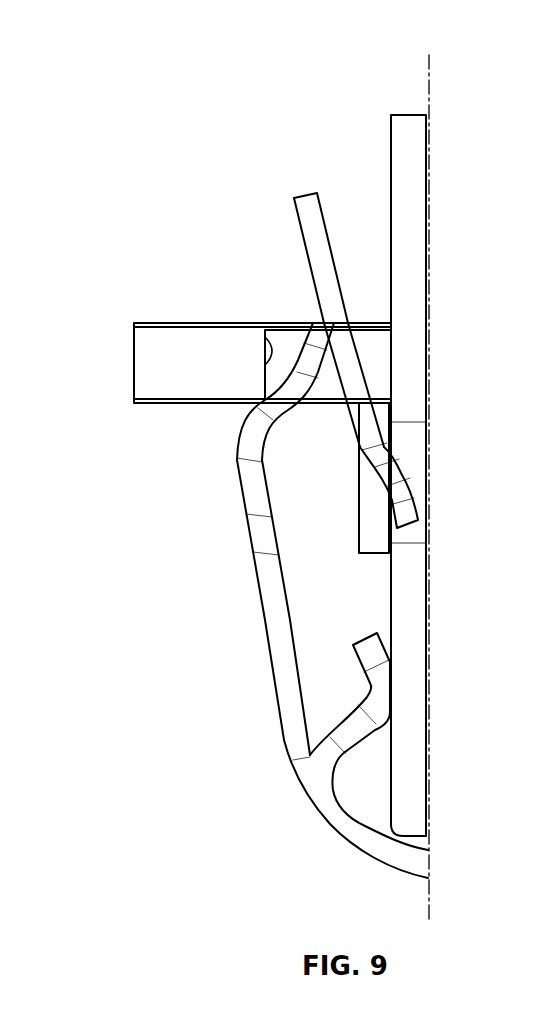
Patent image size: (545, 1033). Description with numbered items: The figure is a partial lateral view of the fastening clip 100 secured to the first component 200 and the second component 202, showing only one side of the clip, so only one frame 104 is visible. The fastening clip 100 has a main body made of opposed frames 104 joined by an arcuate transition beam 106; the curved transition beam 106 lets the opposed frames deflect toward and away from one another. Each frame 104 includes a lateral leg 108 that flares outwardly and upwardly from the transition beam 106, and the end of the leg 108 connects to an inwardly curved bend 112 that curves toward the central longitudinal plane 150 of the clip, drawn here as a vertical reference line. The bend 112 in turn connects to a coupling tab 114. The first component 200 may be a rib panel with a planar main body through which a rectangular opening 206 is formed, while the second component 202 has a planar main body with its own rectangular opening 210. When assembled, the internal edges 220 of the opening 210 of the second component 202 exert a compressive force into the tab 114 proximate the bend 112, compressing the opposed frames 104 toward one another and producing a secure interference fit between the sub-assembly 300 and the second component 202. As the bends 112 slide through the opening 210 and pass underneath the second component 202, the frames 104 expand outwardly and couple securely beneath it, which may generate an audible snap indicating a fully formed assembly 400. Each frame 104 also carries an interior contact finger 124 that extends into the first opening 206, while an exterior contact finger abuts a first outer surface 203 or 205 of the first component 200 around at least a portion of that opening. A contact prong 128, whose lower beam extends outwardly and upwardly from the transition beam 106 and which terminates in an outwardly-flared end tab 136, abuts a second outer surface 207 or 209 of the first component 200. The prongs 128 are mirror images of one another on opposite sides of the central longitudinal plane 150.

The fastening clip 100 is at (310, 549).
The frame 104 is at (296, 614).
The arcuate transition beam 106 is at (425, 879).
The lateral leg 108 is at (253, 580).
The inwardly curved bend 112 is at (237, 434).
The coupling tab 114 is at (368, 367).
The interior contact finger 124 is at (410, 508).
The contact prong 128 is at (360, 722).
The outwardly-flared end tab 136 is at (366, 636).
The central longitudinal plane 150 is at (432, 66).
The first component 200 is at (428, 213).
The second component 202 is at (210, 323).
The first outer surface 203 is at (388, 553).
The first outer surface 205 is at (415, 600).
The rectangular opening 206 is at (418, 450).
The second outer surface 207 is at (372, 740).
The second outer surface 209 is at (432, 786).
The rectangular opening 210 is at (290, 340).
The internal edges 220 is at (266, 332).
The sub-assembly 300 is at (427, 475).
The assembly 400 is at (211, 412).